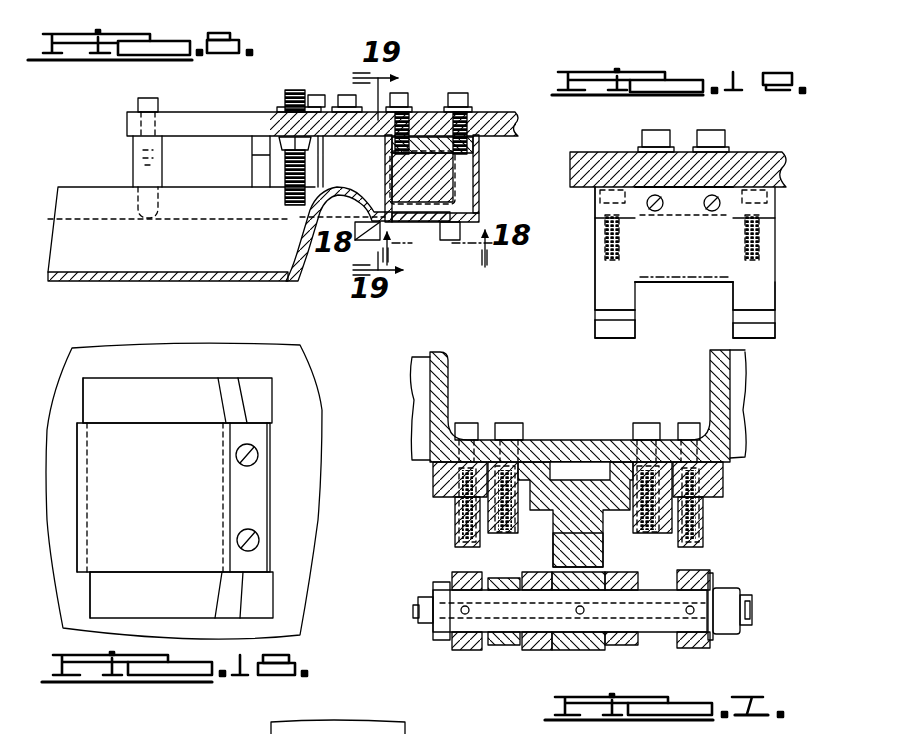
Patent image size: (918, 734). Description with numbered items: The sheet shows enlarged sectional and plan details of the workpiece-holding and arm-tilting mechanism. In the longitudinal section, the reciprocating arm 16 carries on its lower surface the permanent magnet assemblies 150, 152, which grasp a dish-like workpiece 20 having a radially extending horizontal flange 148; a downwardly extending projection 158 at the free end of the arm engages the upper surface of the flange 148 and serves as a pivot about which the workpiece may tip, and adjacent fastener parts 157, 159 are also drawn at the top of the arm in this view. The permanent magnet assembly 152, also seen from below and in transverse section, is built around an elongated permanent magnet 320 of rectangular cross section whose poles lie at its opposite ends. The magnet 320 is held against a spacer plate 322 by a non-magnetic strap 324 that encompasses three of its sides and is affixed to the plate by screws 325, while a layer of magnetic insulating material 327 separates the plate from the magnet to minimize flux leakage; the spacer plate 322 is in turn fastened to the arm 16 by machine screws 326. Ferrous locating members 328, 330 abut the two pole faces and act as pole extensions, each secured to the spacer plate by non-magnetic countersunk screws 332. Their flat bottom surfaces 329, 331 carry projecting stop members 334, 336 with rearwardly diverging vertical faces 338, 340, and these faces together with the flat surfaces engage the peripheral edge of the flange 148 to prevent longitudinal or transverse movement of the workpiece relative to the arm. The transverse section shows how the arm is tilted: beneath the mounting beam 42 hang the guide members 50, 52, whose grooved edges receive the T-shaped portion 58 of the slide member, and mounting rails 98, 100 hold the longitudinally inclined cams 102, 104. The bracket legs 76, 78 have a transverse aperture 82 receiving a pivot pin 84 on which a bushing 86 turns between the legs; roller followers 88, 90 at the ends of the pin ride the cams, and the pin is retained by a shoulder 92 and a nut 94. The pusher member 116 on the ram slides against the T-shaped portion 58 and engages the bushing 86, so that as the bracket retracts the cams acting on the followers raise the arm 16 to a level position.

In FIG. 6, the reciprocating arm 16 is at (503, 120).
In FIG. 19, the reciprocating arm 16 is at (747, 150).
In FIG. 18, the reciprocating arm 16 is at (288, 393).
In FIG. 6, the workpiece 20 is at (73, 193).
In FIG. 7, the mounting beam 42 is at (545, 440).
In FIG. 7, the guide member 50 is at (545, 521).
In FIG. 7, the guide member 52 is at (630, 526).
In FIG. 7, the T-shaped portion 58 is at (577, 490).
In FIG. 7, the leg 76 is at (525, 653).
In FIG. 7, the leg 78 is at (621, 655).
In FIG. 7, the transverse aperture 82 is at (533, 590).
In FIG. 7, the pivot pin 84 is at (692, 592).
In FIG. 7, the bushing 86 is at (578, 651).
In FIG. 7, the roller follower 88 is at (458, 649).
In FIG. 7, the roller follower 90 is at (693, 651).
In FIG. 7, the shoulder 92 is at (437, 631).
In FIG. 7, the nut 94 is at (733, 630).
In FIG. 7, the mounting rail 98 is at (445, 478).
In FIG. 7, the mounting rail 100 is at (721, 480).
In FIG. 7, the cam 102 is at (466, 532).
In FIG. 7, the cam 104 is at (699, 536).
In FIG. 7, the pusher member 116 is at (600, 548).
In FIG. 6, the horizontal flange 148 is at (408, 229).
In FIG. 6, the permanent magnet assembly 150 is at (250, 157).
In FIG. 6, the permanent magnet assembly 152 is at (433, 231).
In FIG. 19, the permanent magnet assembly 152 is at (581, 273).
In FIG. 18, the permanent magnet assembly 152 is at (290, 528).
In FIG. 6, the bolt 157 is at (283, 103).
In FIG. 6, the downwardly extending projection 158 is at (140, 164).
In FIG. 6, the bolt head 159 is at (331, 107).
In FIG. 6, the permanent magnet 320 is at (468, 167).
In FIG. 6, the spacer plate 322 is at (406, 150).
In FIG. 18, the spacer plate 322 is at (270, 437).
In FIG. 6, the strap 324 is at (466, 192).
In FIG. 19, the strap 324 is at (660, 268).
In FIG. 18, the strap 324 is at (157, 455).
In FIG. 19, the screw 325 is at (657, 214).
In FIG. 18, the screw 325 is at (78, 443).
In FIG. 6, the machine screw 326 is at (397, 95).
In FIG. 19, the machine screw 326 is at (702, 132).
In FIG. 19, the magnetic insulating material 327 is at (597, 214).
In FIG. 6, the locating member 328 is at (463, 202).
In FIG. 19, the locating member 328 is at (606, 294).
In FIG. 18, the locating member 328 is at (128, 612).
In FIG. 6, the flat bottom surface 329 is at (450, 216).
In FIG. 19, the flat bottom surface 329 is at (627, 312).
In FIG. 18, the flat bottom surface 329 is at (78, 505).
In FIG. 19, the locating member 330 is at (750, 291).
In FIG. 18, the locating member 330 is at (95, 378).
In FIG. 19, the flat bottom surface 331 is at (753, 316).
In FIG. 18, the flat bottom surface 331 is at (112, 408).
In FIG. 19, the countersunk screw 332 is at (603, 238).
In FIG. 19, the stop member 334 is at (606, 331).
In FIG. 18, the stop member 334 is at (258, 600).
In FIG. 19, the stop member 336 is at (756, 341).
In FIG. 18, the stop member 336 is at (250, 392).
In FIG. 19, the vertical face 338 is at (606, 313).
In FIG. 18, the vertical face 338 is at (222, 590).
In FIG. 19, the vertical face 340 is at (755, 332).
In FIG. 18, the vertical face 340 is at (208, 392).